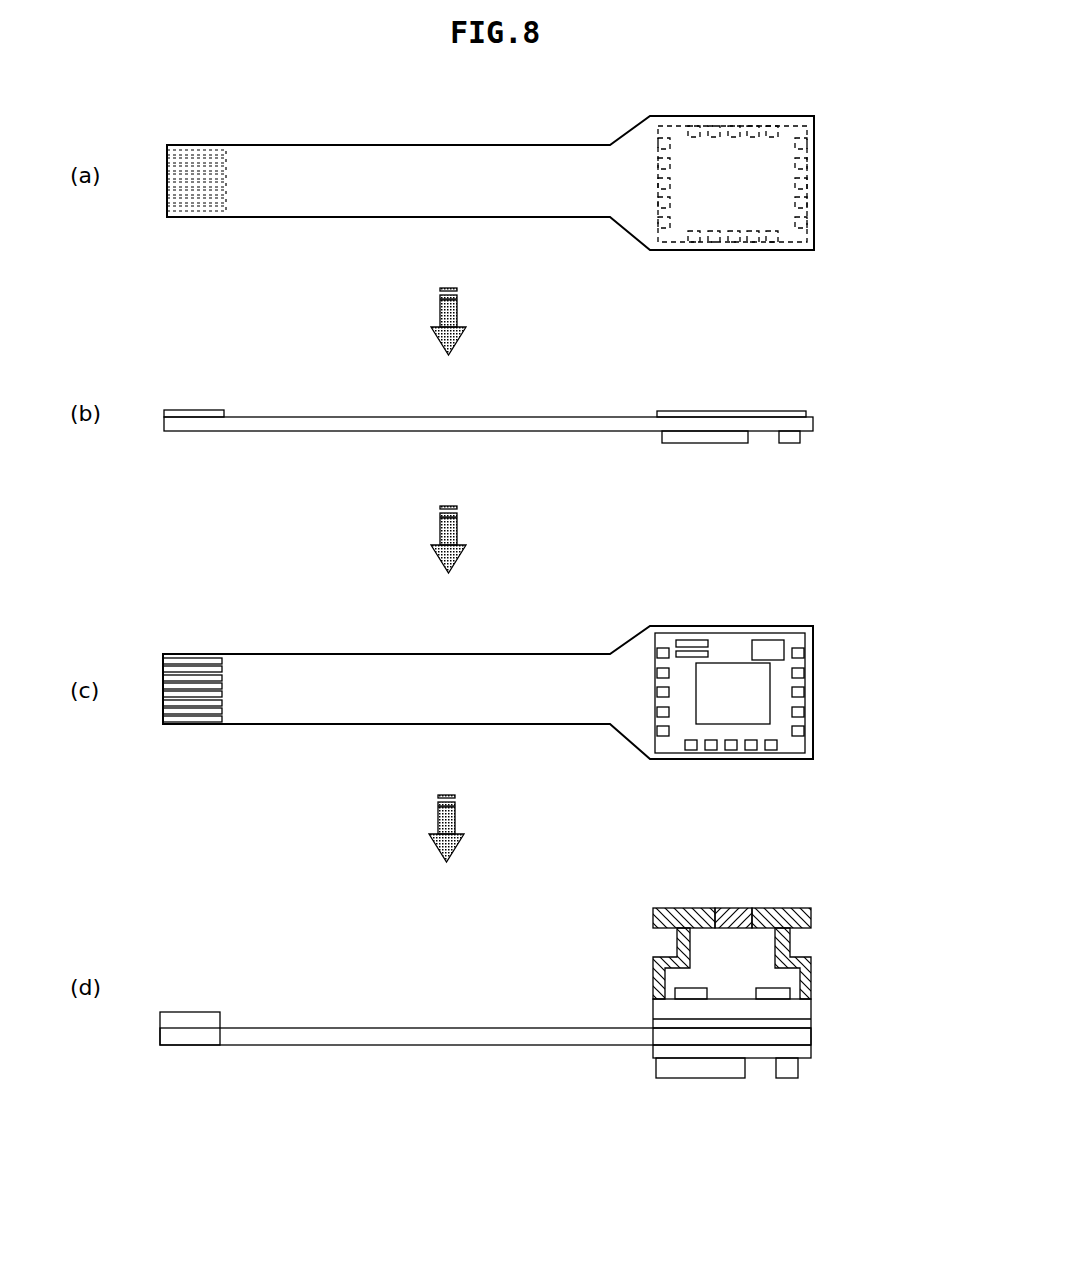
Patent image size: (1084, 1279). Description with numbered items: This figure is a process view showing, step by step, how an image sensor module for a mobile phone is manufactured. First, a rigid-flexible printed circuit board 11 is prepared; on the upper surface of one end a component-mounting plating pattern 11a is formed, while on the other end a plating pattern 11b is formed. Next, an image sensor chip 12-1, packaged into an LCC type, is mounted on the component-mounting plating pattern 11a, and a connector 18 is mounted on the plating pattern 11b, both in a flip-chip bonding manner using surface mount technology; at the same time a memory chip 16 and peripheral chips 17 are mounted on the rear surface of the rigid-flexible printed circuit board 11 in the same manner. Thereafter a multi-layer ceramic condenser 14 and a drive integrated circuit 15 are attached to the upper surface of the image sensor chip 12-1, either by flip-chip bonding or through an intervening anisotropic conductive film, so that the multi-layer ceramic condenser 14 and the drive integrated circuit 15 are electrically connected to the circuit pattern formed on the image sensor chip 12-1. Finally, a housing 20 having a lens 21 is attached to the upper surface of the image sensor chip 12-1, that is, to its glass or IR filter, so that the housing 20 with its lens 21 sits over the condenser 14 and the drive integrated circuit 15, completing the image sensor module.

The rigid-flexible printed circuit board 11 is at (815, 201).
The component-mounting plating pattern 11a is at (785, 172).
The plating pattern 11b is at (203, 160).
The image sensor chip 12-1 is at (748, 411).
The multi-layer ceramic condenser 14 is at (689, 645).
The drive integrated circuit 15 is at (763, 645).
The memory chip 16 is at (698, 443).
The peripheral chips 17 is at (786, 443).
The connector 18 is at (200, 410).
The housing 20 is at (680, 908).
The lens 21 is at (732, 908).